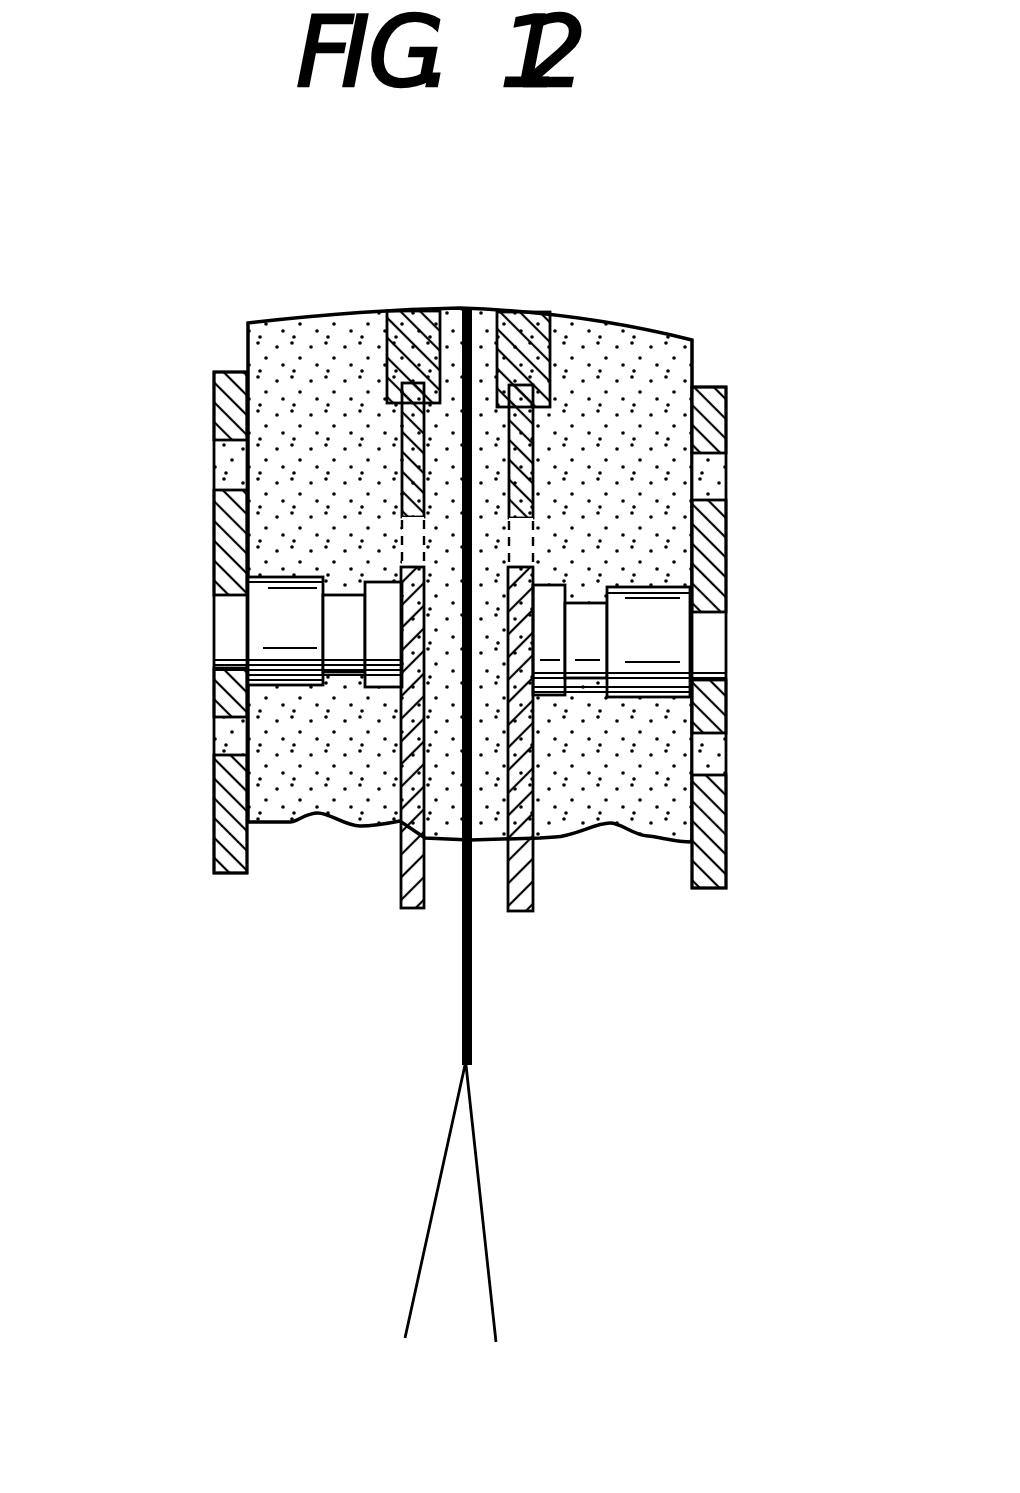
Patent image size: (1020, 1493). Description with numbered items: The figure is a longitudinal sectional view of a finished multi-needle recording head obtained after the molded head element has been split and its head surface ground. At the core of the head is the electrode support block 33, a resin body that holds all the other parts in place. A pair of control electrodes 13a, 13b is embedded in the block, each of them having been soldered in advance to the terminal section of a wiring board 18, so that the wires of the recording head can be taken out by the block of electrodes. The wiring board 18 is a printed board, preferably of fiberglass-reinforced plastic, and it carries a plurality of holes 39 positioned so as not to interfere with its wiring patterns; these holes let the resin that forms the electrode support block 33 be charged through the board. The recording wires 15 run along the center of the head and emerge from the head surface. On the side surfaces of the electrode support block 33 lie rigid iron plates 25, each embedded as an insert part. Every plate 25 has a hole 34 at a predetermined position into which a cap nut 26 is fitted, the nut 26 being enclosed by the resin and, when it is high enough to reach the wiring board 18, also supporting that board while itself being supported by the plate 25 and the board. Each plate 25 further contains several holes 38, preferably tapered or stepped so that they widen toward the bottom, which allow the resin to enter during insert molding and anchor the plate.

The control electrode 13a is at (412, 311).
The control electrode 13b is at (528, 320).
The wire 15 is at (450, 1118).
The wiring board 18 is at (410, 908).
The plate 25 is at (215, 395).
The nut 26 is at (287, 627).
The electrode support block 33 is at (633, 345).
The hole 34 is at (215, 650).
The hole 38 is at (215, 485).
The hole 39 is at (410, 540).